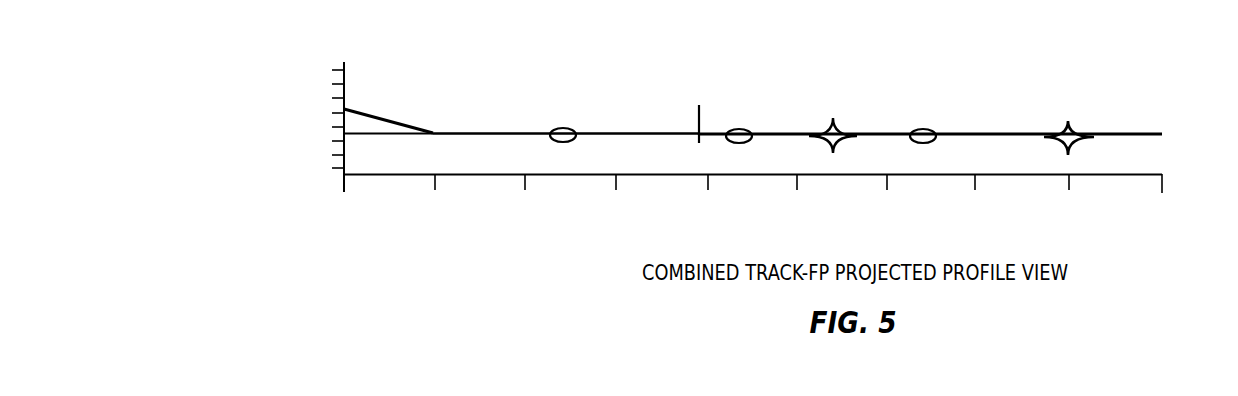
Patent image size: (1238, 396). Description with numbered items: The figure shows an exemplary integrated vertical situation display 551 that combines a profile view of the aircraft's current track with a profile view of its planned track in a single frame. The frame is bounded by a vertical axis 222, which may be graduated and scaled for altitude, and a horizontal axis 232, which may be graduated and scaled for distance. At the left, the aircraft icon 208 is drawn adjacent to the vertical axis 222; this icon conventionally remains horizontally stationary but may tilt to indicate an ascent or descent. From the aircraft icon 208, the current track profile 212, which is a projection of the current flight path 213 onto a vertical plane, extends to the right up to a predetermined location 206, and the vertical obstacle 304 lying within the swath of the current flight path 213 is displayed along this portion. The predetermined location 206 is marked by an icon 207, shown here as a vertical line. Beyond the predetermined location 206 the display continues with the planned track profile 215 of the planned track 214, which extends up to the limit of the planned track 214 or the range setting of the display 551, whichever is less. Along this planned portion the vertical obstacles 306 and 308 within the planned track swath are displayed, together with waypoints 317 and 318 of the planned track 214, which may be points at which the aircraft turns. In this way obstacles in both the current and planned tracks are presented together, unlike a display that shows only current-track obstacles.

The integrated vertical situation display 551 is at (242, 128).
The vertical axis 222 is at (343, 63).
The aircraft icon 208 is at (355, 108).
The current flight path 213 is at (463, 98).
The vertical obstacle 304 is at (566, 128).
The icon 207 is at (696, 120).
The current track profile 212 is at (672, 137).
The predetermined location 206 is at (698, 150).
The planned track profile 215 is at (712, 137).
The vertical obstacle 306 is at (734, 129).
The waypoint 317 is at (838, 122).
The vertical obstacle 308 is at (917, 129).
The planned track 214 is at (1014, 84).
The waypoint 318 is at (1073, 126).
The horizontal axis 232 is at (1127, 180).